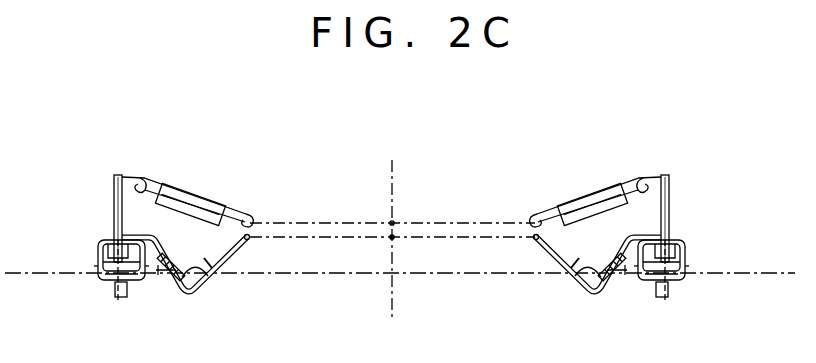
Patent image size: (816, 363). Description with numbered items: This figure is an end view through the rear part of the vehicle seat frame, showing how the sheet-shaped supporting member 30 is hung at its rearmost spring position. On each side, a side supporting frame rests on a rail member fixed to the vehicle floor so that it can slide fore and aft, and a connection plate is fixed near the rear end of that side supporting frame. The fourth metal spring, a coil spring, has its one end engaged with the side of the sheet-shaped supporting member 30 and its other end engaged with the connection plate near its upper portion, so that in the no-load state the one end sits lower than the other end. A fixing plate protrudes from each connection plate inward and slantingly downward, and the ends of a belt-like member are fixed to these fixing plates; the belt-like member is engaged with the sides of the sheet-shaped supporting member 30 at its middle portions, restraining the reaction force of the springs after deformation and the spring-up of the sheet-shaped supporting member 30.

The sheet-shaped supporting member 30 is at (392, 223).